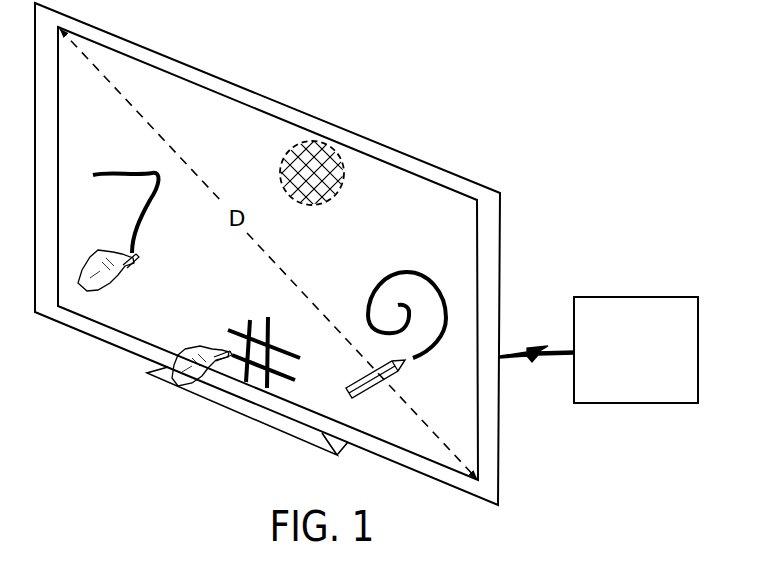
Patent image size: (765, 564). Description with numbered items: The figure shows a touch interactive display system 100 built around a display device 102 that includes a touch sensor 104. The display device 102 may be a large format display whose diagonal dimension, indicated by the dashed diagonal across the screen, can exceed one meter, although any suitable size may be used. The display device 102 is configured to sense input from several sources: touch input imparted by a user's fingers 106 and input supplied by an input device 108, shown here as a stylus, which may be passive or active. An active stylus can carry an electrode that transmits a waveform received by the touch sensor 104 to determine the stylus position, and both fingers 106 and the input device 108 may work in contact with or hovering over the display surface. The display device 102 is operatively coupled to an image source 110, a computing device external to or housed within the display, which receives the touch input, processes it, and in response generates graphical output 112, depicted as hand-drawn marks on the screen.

The touch interactive display system 100 is at (315, 43).
The display device 102 is at (154, 64).
The touch sensor 104 is at (336, 152).
The fingers 106 is at (133, 264).
The input device 108 is at (349, 398).
The image source 110 is at (619, 388).
The graphical output 112 is at (130, 172).